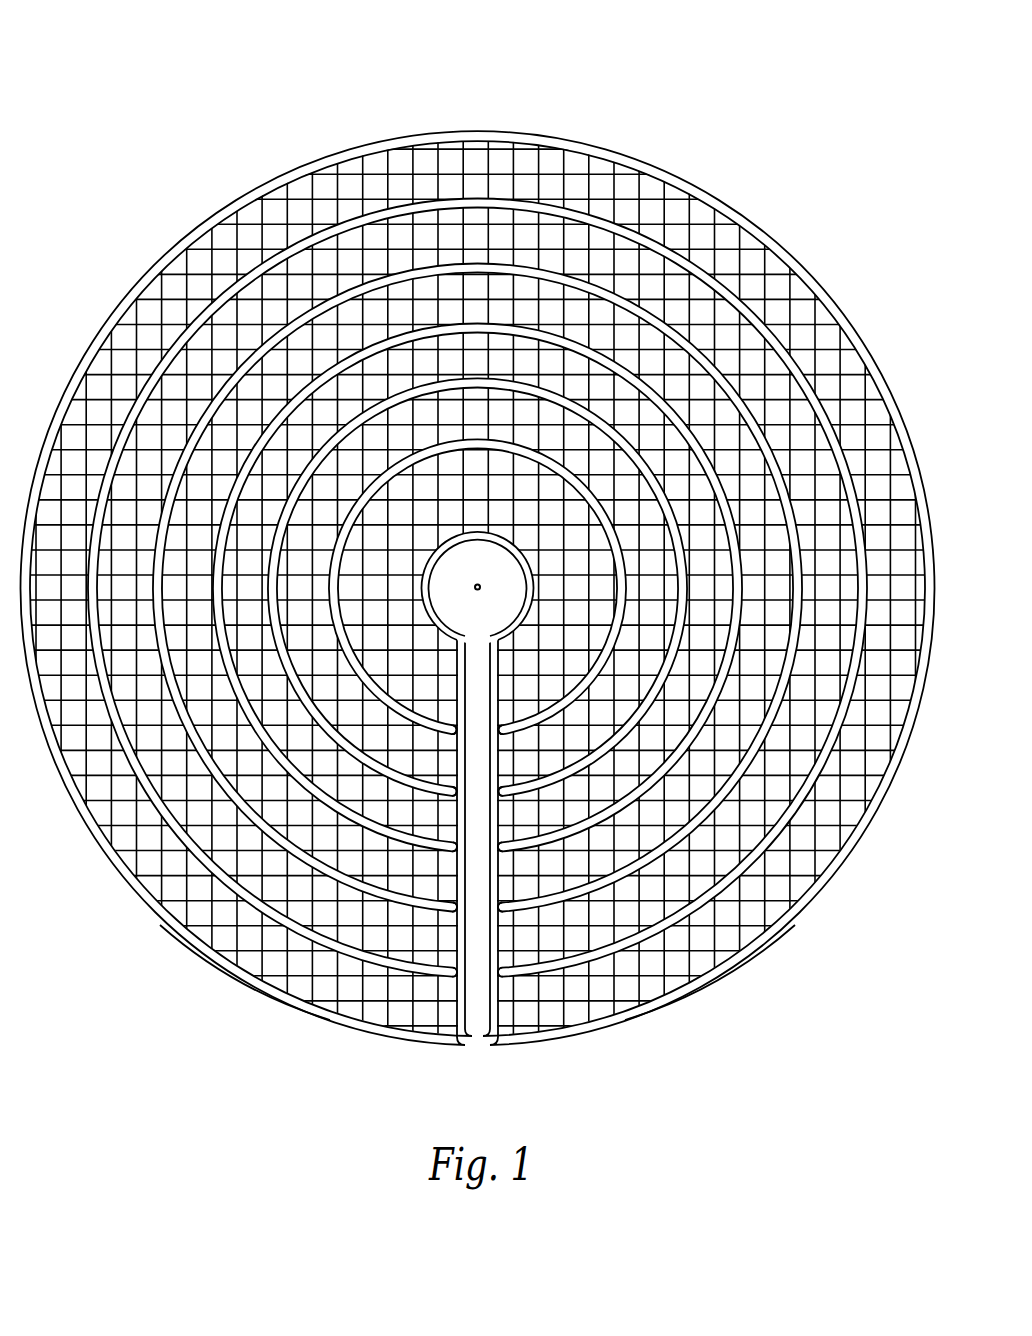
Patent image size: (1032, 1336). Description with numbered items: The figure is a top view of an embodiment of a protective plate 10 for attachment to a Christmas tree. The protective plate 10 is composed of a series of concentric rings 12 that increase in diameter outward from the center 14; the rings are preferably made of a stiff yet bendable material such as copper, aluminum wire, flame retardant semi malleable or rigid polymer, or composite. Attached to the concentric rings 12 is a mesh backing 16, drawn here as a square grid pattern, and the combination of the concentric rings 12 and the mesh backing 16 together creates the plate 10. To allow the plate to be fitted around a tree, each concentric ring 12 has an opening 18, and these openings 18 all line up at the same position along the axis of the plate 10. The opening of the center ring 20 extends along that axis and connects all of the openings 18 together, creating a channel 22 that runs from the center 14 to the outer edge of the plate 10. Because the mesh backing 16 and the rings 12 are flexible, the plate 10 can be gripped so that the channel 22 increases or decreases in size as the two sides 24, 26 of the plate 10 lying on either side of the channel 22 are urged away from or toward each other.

The protective plate 10 is at (701, 97).
The concentric rings 12 is at (357, 497).
The center 14 is at (497, 600).
The mesh backing 16 is at (472, 165).
The opening 18 is at (475, 730).
The center ring 20 is at (441, 565).
The channel 22 is at (476, 1030).
The side 24 is at (258, 997).
The side 26 is at (716, 978).